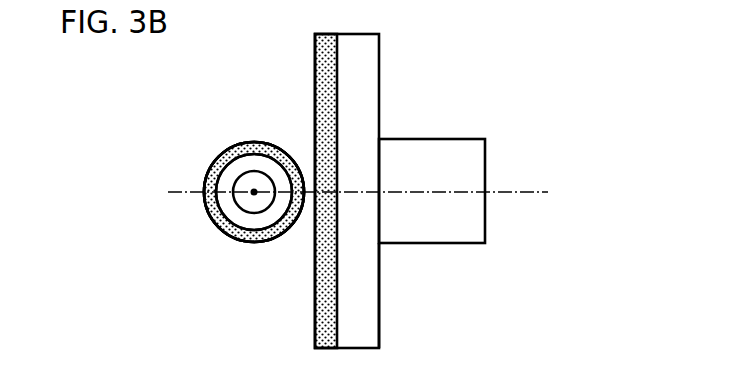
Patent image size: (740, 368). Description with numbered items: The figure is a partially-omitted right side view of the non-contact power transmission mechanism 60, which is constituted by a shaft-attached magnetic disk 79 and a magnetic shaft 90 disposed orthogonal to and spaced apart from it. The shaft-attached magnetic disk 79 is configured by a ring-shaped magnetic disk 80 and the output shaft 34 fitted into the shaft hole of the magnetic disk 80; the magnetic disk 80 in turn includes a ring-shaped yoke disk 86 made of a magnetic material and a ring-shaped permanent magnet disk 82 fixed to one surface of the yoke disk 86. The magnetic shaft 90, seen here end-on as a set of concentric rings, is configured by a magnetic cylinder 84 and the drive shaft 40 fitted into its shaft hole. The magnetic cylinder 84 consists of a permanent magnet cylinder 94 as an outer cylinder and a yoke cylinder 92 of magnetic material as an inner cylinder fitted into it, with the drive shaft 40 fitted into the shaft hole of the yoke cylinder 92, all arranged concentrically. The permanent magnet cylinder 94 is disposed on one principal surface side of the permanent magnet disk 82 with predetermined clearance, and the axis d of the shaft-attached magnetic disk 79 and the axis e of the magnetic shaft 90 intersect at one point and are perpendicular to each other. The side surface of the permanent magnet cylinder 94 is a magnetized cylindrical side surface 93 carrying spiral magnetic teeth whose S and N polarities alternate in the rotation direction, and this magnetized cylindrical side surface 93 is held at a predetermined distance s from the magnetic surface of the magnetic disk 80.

The non-contact power transmission mechanism 60 is at (568, 50).
The magnetic disk 80 is at (381, 55).
The permanent magnet disk 82 is at (327, 57).
The yoke disk 86 is at (365, 291).
The output shaft 34 is at (473, 167).
The shaft-attached magnetic disk 79 is at (409, 122).
The magnetic shaft 90 is at (189, 182).
The magnetic cylinder 84 is at (230, 143).
The permanent magnet cylinder 94 is at (255, 144).
The magnetized cylindrical side surface 93 is at (213, 220).
The yoke cylinder 92 is at (242, 220).
The drive shaft 40 is at (248, 182).
The axis of the shaft-attached magnetic disk d is at (366, 193).
The axis of the magnetic shaft e is at (254, 192).
The predetermined distance s is at (310, 202).